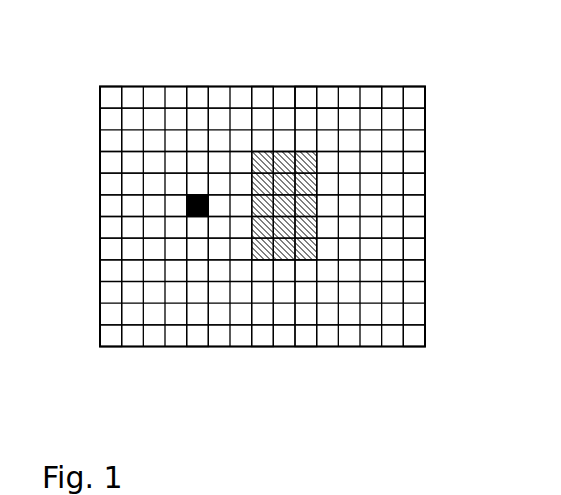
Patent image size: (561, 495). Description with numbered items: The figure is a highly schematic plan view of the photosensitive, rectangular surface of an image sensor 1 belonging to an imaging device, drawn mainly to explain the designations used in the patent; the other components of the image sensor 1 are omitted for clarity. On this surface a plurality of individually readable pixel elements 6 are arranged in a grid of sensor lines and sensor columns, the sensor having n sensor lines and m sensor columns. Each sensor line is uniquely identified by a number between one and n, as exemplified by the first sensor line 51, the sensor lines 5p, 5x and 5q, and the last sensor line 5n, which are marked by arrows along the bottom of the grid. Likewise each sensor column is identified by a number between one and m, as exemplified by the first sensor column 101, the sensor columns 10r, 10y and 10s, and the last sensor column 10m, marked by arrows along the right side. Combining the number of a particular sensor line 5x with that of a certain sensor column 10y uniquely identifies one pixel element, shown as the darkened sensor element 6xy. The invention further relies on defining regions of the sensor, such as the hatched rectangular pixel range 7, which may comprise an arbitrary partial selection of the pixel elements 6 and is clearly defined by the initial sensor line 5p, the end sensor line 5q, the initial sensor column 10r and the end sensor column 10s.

The image sensor 1 is at (100, 162).
The pixel elements 6 is at (374, 92).
The pixel range 7 is at (260, 162).
The sensor element 6xy is at (187, 215).
The first sensor line 51 is at (110, 355).
The sensor line x 5x is at (195, 355).
The initial sensor line 5p is at (263, 355).
The end sensor line 5q is at (307, 355).
The last sensor line 5n is at (412, 355).
The last sensor column 10m is at (442, 96).
The end sensor column 10s is at (442, 160).
The sensor column y 10y is at (442, 205).
The initial sensor column 10r is at (442, 248).
The first sensor column 101 is at (442, 335).